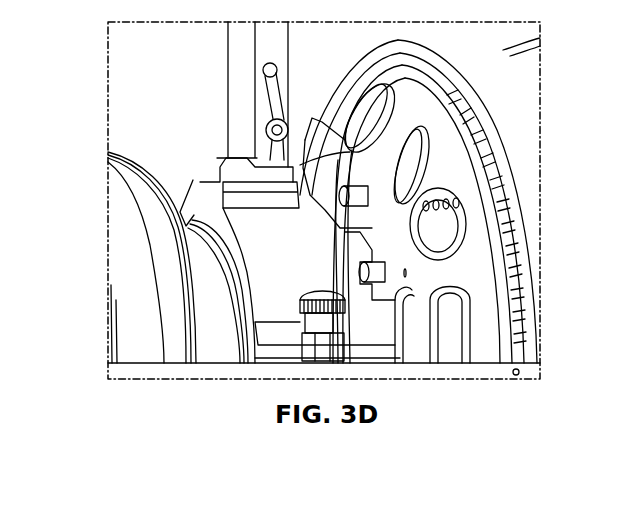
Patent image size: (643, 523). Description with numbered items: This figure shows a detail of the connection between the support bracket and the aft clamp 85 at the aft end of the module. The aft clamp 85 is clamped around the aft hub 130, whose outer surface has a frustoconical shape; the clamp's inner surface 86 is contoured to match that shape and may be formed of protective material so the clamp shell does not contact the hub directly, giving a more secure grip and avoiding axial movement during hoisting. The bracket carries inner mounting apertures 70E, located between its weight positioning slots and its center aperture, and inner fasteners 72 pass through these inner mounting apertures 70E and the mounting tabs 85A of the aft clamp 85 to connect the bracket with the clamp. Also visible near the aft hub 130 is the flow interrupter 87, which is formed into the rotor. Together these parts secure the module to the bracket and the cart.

The aft hub 130 is at (168, 182).
The inner fasteners 72 is at (332, 140).
The inner mounting apertures 70E is at (410, 218).
The mounting tabs 85A is at (405, 273).
The aft clamp 85 is at (375, 333).
The inner surface 86 is at (235, 240).
The flow interrupter 87 is at (240, 283).